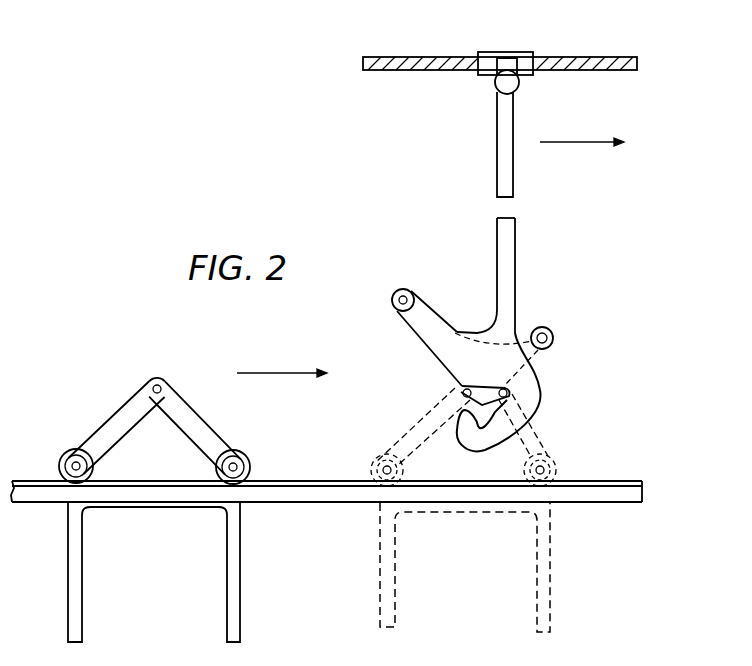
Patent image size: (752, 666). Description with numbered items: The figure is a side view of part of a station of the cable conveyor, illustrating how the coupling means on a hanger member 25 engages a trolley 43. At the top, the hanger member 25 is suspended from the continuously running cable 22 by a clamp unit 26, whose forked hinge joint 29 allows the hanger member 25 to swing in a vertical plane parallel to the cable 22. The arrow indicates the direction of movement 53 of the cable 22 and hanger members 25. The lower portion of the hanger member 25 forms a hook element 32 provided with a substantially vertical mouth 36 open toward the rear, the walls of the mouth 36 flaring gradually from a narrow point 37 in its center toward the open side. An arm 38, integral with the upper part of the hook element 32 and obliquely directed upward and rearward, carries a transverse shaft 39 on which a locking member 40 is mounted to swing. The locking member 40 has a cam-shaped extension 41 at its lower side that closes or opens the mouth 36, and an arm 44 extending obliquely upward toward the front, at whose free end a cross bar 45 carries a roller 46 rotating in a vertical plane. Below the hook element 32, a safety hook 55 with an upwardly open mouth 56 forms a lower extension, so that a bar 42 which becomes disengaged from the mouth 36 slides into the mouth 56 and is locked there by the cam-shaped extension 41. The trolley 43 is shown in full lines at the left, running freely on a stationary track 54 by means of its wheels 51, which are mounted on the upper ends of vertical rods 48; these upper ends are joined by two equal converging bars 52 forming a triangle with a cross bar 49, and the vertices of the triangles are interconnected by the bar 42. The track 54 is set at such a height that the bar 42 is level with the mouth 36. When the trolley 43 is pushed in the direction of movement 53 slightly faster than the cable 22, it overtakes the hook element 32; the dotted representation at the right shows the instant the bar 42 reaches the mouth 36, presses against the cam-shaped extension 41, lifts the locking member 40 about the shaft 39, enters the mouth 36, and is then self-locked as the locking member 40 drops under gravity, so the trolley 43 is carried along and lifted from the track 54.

The cable 22 is at (602, 60).
The hanger member 25 is at (510, 180).
The clamp unit 26 is at (512, 45).
The forked hinge joint 29 is at (503, 80).
The hook element 32 is at (500, 307).
The mouth 36 is at (500, 396).
The narrow point 37 is at (509, 392).
The arm 38 is at (418, 318).
The transverse shaft 39 is at (400, 290).
The locking member 40 is at (437, 327).
The cam-shaped extension 41 is at (462, 386).
The bar 42 is at (165, 385).
The trolley 43 is at (420, 415).
The arm 44 is at (542, 352).
The cross bar 45 is at (552, 335).
The roller 46 is at (554, 341).
The vertical rod 48 is at (227, 550).
The cross bar 49 is at (171, 502).
The wheel 51 is at (63, 452).
The converging bar 52 is at (530, 441).
The direction of movement 53 is at (573, 148).
The stationary track 54 is at (143, 491).
The safety hook 55 is at (488, 437).
The mouth 56 is at (492, 385).